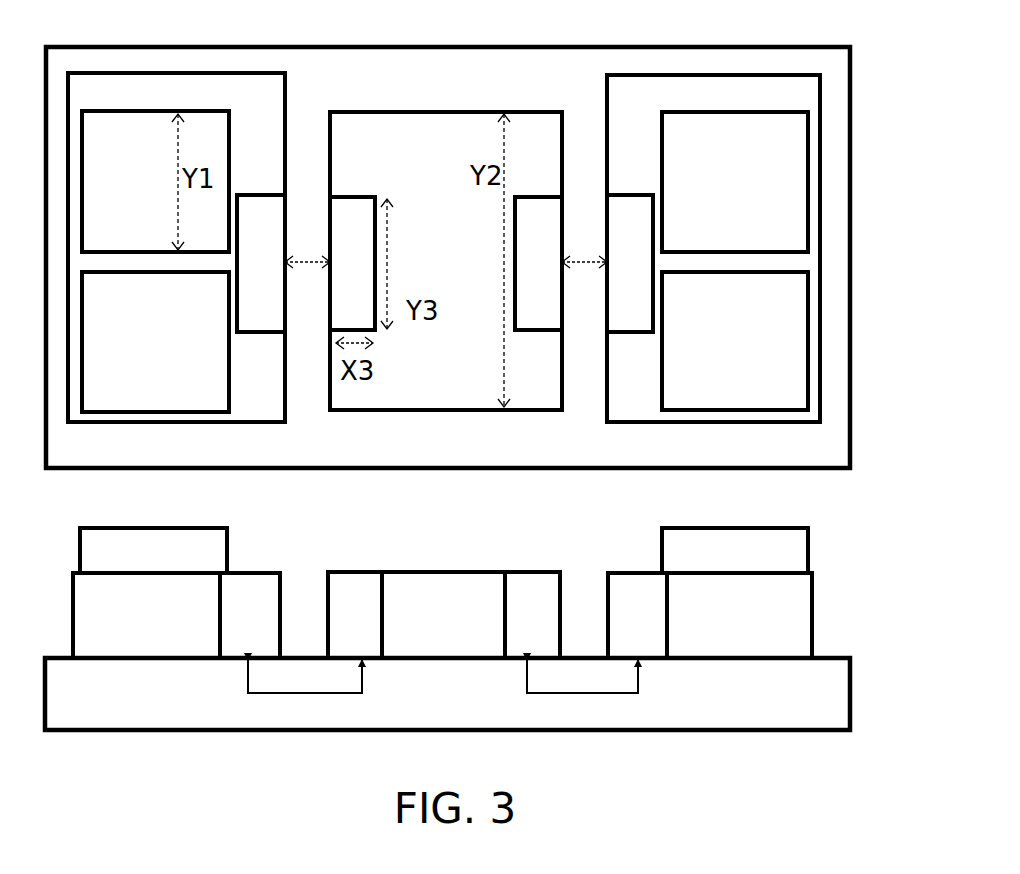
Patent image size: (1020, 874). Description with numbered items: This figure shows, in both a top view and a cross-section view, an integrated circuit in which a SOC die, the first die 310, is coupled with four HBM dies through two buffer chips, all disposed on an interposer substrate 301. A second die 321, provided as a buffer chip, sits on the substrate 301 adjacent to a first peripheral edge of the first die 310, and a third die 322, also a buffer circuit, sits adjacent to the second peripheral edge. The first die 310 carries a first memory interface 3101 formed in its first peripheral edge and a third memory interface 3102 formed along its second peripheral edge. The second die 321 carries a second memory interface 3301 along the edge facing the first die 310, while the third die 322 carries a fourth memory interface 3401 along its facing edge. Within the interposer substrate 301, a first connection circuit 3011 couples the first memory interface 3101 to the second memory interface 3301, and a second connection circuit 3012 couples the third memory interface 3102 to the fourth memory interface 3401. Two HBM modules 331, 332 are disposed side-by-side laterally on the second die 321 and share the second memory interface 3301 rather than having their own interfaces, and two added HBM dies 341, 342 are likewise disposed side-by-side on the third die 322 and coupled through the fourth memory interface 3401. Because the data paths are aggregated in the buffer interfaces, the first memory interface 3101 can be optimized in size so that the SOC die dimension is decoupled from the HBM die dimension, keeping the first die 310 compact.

The interposer substrate 301 is at (849, 451).
The first die 310 is at (470, 410).
The second die 321 is at (242, 422).
The third die 322 is at (758, 420).
The HBM module 331 is at (43, 560).
The HBM module 332 is at (155, 181).
The HBM module 341 is at (855, 548).
The HBM module 342 is at (735, 182).
The first connection circuit 3011 is at (198, 692).
The second connection circuit 3012 is at (690, 685).
The first memory interface 3101 is at (376, 330).
The third memory interface 3102 is at (548, 330).
The second memory interface 3301 is at (272, 325).
The fourth memory interface 3401 is at (644, 322).